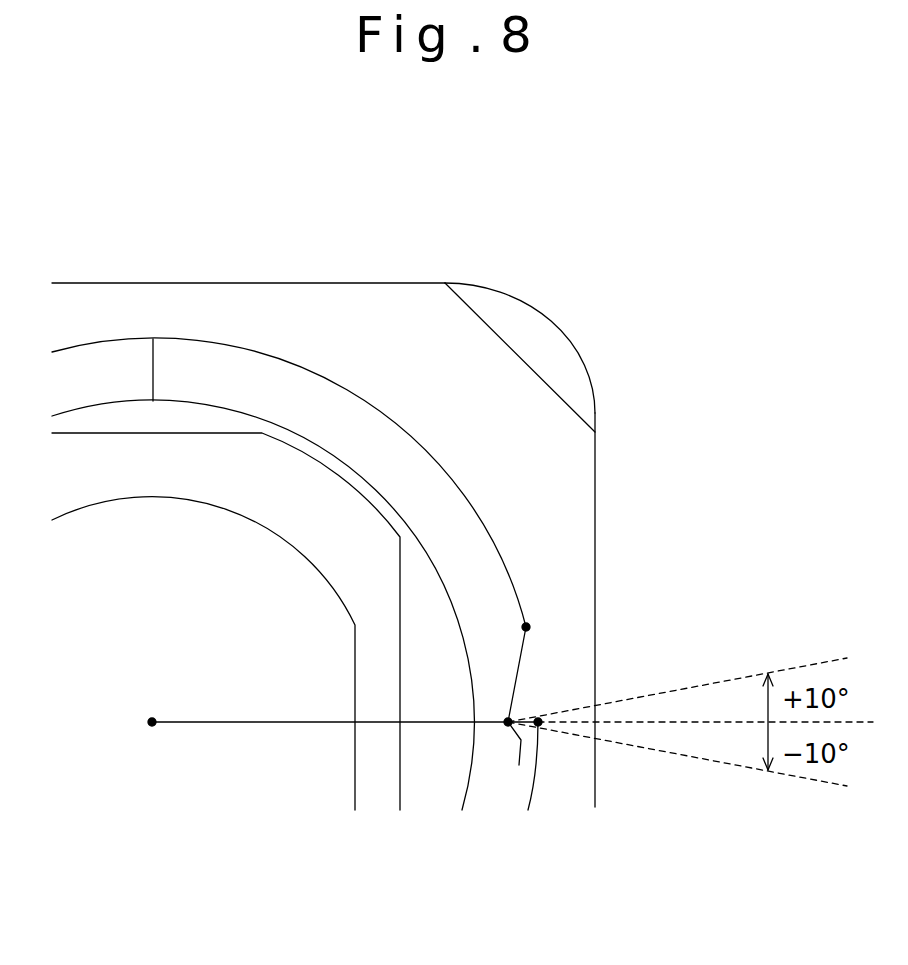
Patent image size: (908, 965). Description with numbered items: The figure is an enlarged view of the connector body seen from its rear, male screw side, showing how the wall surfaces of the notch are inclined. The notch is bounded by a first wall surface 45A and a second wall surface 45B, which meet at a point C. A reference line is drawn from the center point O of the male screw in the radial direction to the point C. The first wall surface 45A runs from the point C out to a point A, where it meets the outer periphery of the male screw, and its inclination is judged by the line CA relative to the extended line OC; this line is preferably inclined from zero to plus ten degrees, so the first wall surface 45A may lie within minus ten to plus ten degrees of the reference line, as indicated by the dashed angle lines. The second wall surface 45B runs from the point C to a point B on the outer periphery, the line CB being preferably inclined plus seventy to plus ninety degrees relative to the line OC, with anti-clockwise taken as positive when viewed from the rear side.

The first wall surface 45A is at (519, 765).
The second wall surface 45B is at (528, 661).
The center point O is at (138, 743).
The point A is at (554, 758).
The point B is at (513, 634).
The point C is at (500, 739).